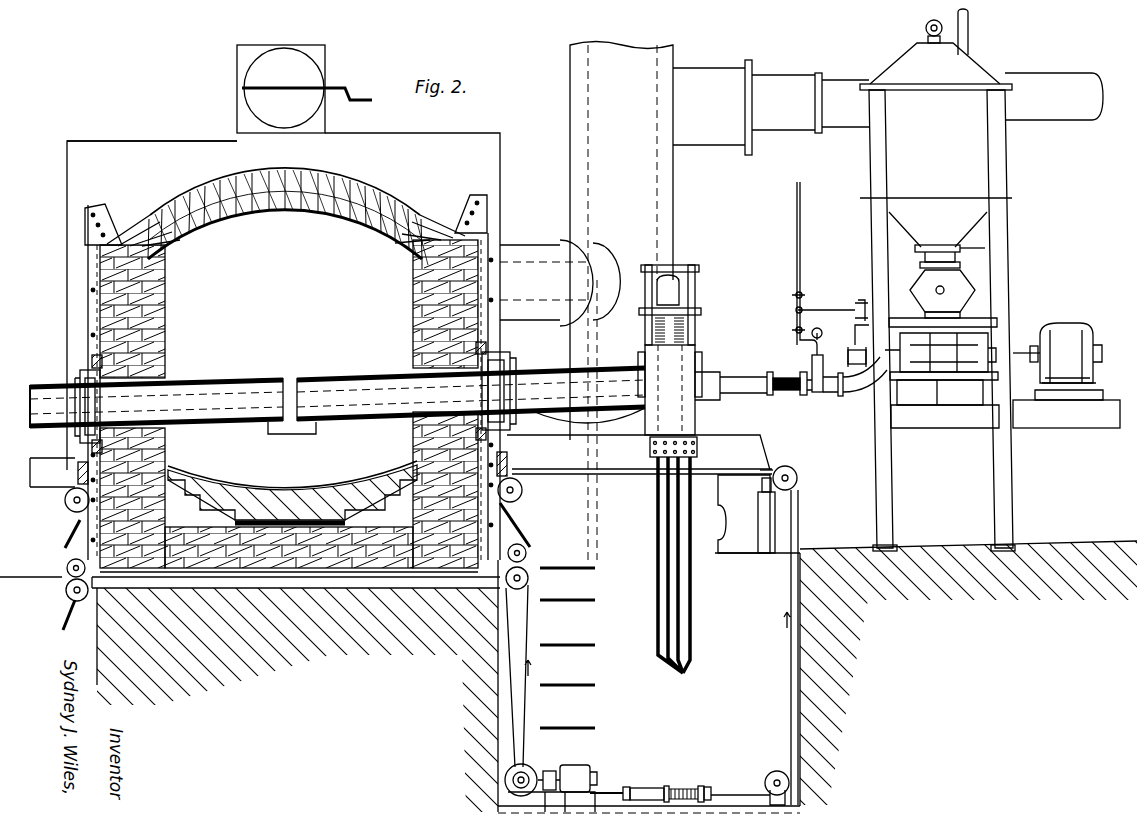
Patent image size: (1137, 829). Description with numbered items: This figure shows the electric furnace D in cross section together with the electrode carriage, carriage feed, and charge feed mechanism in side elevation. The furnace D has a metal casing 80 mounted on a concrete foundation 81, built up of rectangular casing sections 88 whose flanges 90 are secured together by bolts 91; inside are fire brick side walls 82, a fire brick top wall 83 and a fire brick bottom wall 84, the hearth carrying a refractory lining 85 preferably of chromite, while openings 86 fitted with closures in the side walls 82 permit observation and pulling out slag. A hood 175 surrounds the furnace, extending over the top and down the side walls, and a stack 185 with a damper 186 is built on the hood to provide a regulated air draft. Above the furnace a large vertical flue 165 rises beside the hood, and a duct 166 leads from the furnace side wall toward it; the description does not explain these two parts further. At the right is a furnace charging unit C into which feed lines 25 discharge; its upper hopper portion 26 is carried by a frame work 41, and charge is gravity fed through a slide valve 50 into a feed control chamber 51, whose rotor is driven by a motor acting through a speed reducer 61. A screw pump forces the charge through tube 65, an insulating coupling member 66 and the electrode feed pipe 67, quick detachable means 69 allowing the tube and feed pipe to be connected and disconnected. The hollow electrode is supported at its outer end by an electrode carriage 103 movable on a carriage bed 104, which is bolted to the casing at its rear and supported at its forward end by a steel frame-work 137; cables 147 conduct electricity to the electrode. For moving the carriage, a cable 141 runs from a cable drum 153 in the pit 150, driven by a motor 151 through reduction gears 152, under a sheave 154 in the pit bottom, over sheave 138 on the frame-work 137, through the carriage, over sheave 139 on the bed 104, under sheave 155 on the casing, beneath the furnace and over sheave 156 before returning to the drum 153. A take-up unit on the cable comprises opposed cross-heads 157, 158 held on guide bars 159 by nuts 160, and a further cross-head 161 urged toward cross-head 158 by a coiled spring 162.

The feed line 25 is at (968, 33).
The hopper portion 26 is at (970, 156).
The frame work 41 is at (1005, 217).
The slide valve 50 is at (962, 248).
The feed control chamber 51 is at (975, 277).
The speed reducer 61 is at (980, 292).
The tube 65 is at (818, 393).
The insulating coupling member 66 is at (787, 376).
The electrode feed pipe 67 is at (740, 381).
The quick detachable means 69 is at (802, 395).
The metal casing 80 is at (88, 303).
The concrete foundation 81 is at (108, 645).
The fire brick side wall 82 is at (165, 297).
The fire brick top wall 83 is at (288, 212).
The fire brick bottom wall 84 is at (228, 520).
The refractory lining 85 is at (330, 488).
The opening 86 is at (290, 378).
The casing section 88 is at (95, 322).
The flange 90 is at (97, 345).
The bolt 91 is at (70, 270).
The electrode carriage 103 is at (697, 355).
The carriage bed 104 is at (620, 460).
The steel frame-work 137 is at (758, 490).
The sheave 138 is at (797, 472).
The sheave 139 is at (65, 508).
The cable 141 is at (800, 508).
The cable 147 is at (678, 576).
The pit 150 is at (265, 566).
The motor 151 is at (580, 766).
The reduction gears 152 is at (560, 770).
The cable drum 153 is at (530, 770).
The sheave 154 is at (773, 771).
The sheave 155 is at (67, 568).
The sheave 156 is at (66, 592).
The cross-head 157 is at (733, 785).
The cross-head 158 is at (632, 786).
The guide bar 159 is at (650, 787).
The nut 160 is at (627, 786).
The cross-head 161 is at (676, 785).
The coiled spring 162 is at (684, 787).
The flue 165 is at (595, 113).
The duct 166 is at (530, 239).
The hood 175 is at (67, 186).
The stack 185 is at (237, 66).
The damper 186 is at (255, 81).
The furnace charging unit C is at (868, 241).
The furnace D is at (148, 132).